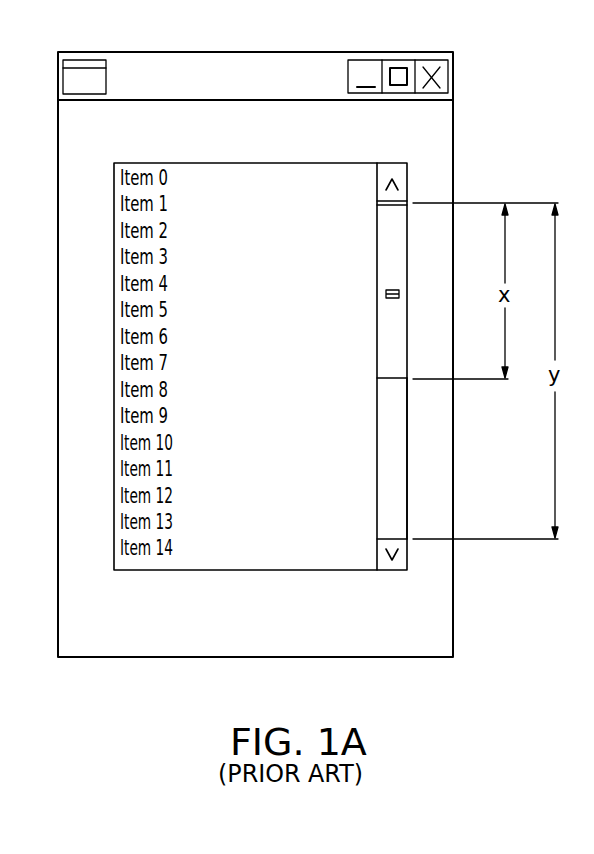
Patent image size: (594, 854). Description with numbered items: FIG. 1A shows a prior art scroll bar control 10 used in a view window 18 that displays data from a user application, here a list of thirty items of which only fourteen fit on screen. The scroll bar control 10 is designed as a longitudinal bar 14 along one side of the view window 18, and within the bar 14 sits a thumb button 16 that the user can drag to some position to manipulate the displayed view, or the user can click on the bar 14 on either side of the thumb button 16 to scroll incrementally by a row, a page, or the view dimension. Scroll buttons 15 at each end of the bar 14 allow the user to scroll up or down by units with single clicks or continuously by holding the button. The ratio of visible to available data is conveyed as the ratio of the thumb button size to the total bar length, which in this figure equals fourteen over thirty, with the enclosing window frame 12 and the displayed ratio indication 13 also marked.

The scroll bar control 10 is at (378, 203).
The window 12 is at (343, 657).
The status indicator 13 is at (260, 655).
The longitudinal bar 14 is at (393, 504).
The scroll buttons 15 is at (407, 175).
The thumb button 16 is at (382, 254).
The view window 18 is at (401, 52).